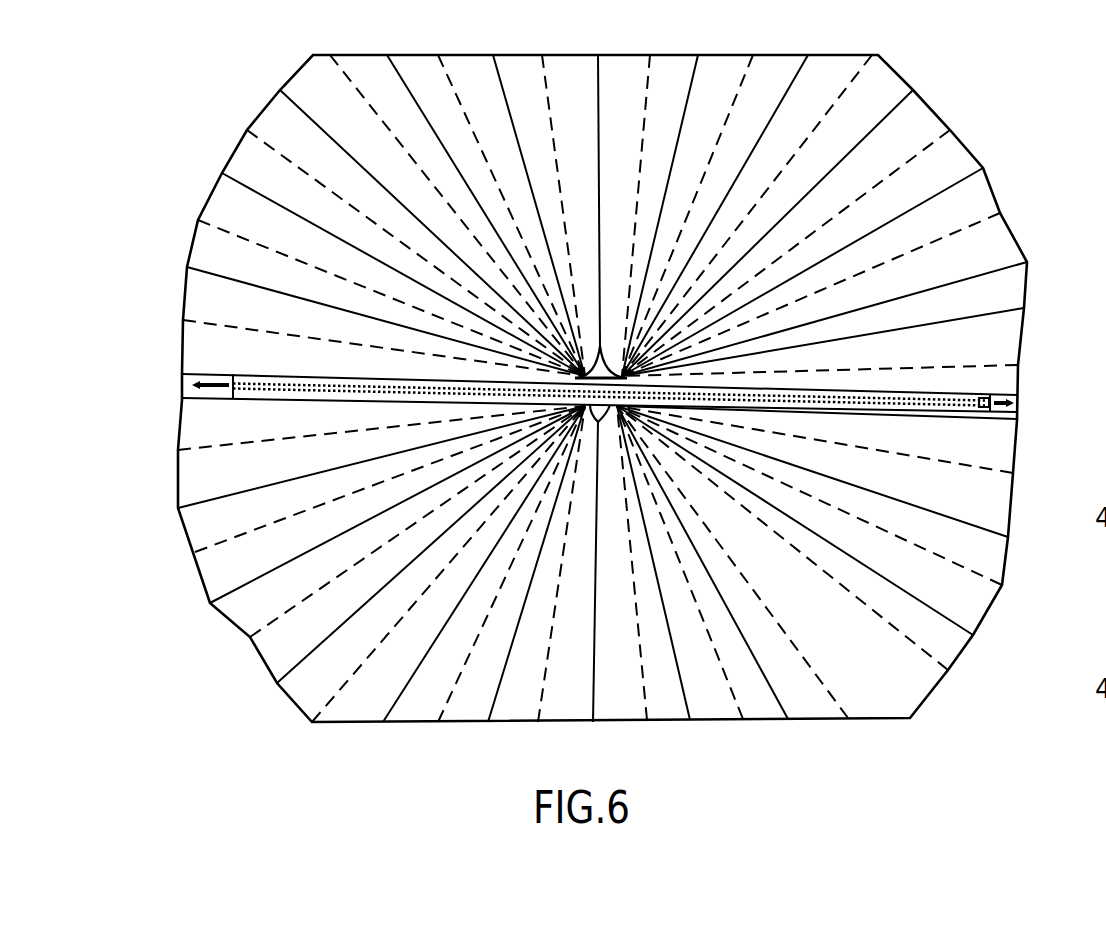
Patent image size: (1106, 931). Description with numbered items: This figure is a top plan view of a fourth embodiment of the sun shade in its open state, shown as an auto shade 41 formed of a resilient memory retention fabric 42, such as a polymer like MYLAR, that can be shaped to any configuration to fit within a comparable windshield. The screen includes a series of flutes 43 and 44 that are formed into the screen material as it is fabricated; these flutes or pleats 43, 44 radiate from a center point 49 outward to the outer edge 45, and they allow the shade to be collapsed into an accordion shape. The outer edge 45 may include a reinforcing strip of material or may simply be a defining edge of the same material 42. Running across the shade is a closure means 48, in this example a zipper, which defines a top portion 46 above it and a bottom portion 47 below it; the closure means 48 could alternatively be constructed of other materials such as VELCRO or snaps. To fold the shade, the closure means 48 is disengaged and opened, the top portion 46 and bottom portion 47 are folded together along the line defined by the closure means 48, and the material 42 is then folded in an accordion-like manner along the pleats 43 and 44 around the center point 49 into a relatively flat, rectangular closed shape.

The auto shade 41 is at (910, 70).
The memory retention fabric 42 is at (1006, 333).
The flute 43 is at (1005, 252).
The flute 44 is at (980, 197).
The outer edge 45 is at (962, 652).
The top portion 46 is at (278, 127).
The bottom portion 47 is at (203, 588).
The closure means 48 is at (927, 410).
The center point 49 is at (602, 424).